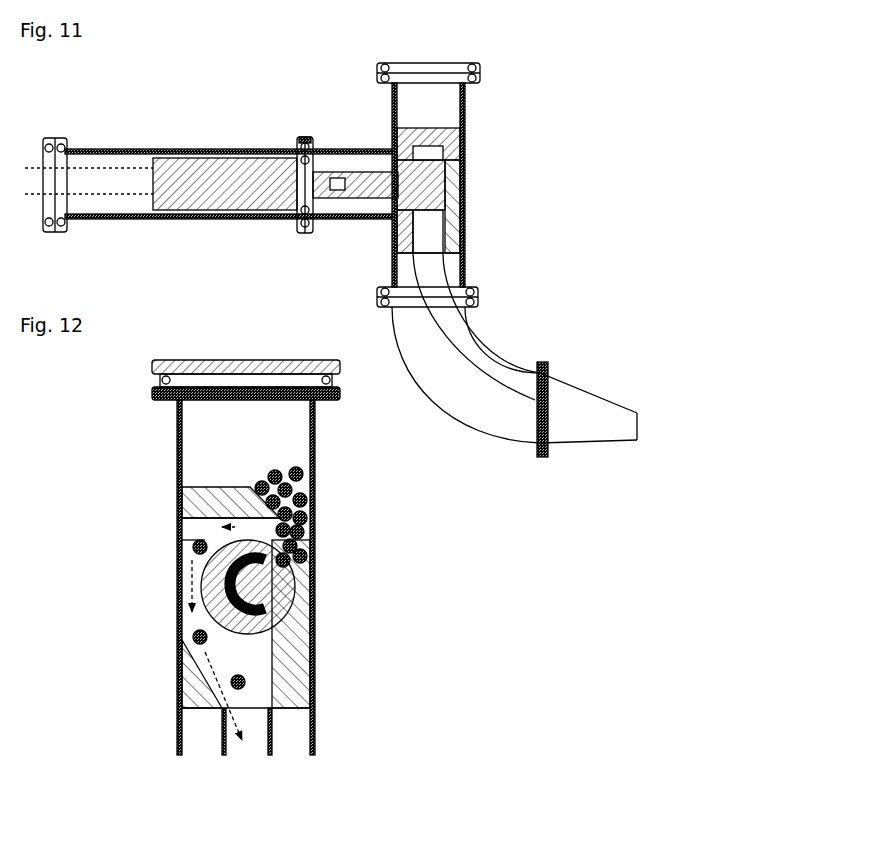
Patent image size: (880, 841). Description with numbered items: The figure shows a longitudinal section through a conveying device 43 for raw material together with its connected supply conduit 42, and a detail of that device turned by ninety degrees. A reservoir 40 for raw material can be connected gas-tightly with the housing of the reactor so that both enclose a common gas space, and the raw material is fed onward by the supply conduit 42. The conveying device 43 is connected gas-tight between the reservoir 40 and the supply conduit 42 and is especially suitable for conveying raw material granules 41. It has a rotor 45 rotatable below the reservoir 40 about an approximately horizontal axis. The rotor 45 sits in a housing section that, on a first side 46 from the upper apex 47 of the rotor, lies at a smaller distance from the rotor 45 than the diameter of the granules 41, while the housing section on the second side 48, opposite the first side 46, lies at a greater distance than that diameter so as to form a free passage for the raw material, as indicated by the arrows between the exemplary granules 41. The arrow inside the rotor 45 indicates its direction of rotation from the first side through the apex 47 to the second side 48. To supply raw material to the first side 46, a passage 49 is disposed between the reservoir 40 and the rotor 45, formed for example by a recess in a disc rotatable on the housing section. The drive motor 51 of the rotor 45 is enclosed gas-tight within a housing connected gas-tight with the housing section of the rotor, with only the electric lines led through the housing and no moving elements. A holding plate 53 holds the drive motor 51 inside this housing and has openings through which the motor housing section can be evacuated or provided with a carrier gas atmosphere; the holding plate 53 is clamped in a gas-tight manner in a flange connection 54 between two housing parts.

In FIG. 11, the reservoir 40 is at (415, 105).
In FIG. 12, the reservoir 40 is at (217, 450).
In FIG. 12, the raw material granules 41 is at (300, 476).
In FIG. 11, the supply conduit 42 is at (587, 407).
In FIG. 12, the supply conduit 42 is at (265, 757).
In FIG. 11, the conveying device 43 is at (625, 130).
In FIG. 11, the rotor 45 is at (430, 190).
In FIG. 12, the rotor 45 is at (203, 582).
In FIG. 12, the first side 46 is at (305, 552).
In FIG. 11, the upper apex 47 is at (427, 158).
In FIG. 12, the upper apex 47 is at (240, 545).
In FIG. 12, the second side 48 is at (190, 557).
In FIG. 12, the passage 49 is at (300, 517).
In FIG. 11, the drive motor 51 is at (227, 175).
In FIG. 11, the holding plate 53 is at (303, 157).
In FIG. 11, the flange connection 54 is at (305, 135).